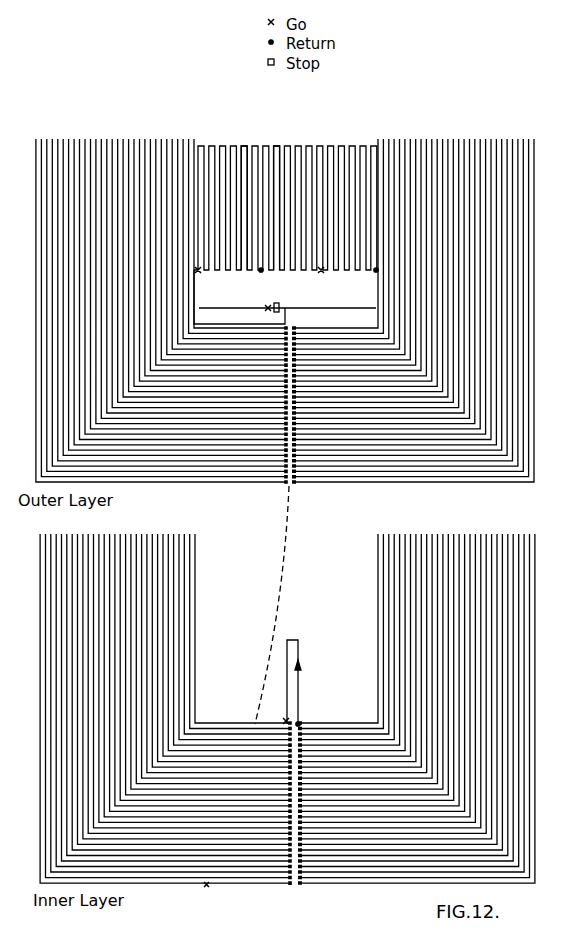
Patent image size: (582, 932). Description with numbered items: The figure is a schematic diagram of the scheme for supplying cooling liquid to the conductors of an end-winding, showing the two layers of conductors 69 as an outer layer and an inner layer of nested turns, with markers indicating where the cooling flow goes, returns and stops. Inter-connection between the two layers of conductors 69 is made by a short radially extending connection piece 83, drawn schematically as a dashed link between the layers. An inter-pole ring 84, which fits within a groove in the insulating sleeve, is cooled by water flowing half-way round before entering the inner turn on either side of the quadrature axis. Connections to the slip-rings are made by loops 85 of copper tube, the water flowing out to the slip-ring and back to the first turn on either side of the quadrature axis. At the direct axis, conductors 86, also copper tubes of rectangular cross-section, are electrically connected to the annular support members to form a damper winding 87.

The conductors 69 is at (467, 477).
The connection piece 83 is at (268, 596).
The inter-pole ring 84 is at (327, 300).
The loops 85 is at (291, 642).
The conductors 86 is at (271, 137).
The damper winding 87 is at (313, 137).